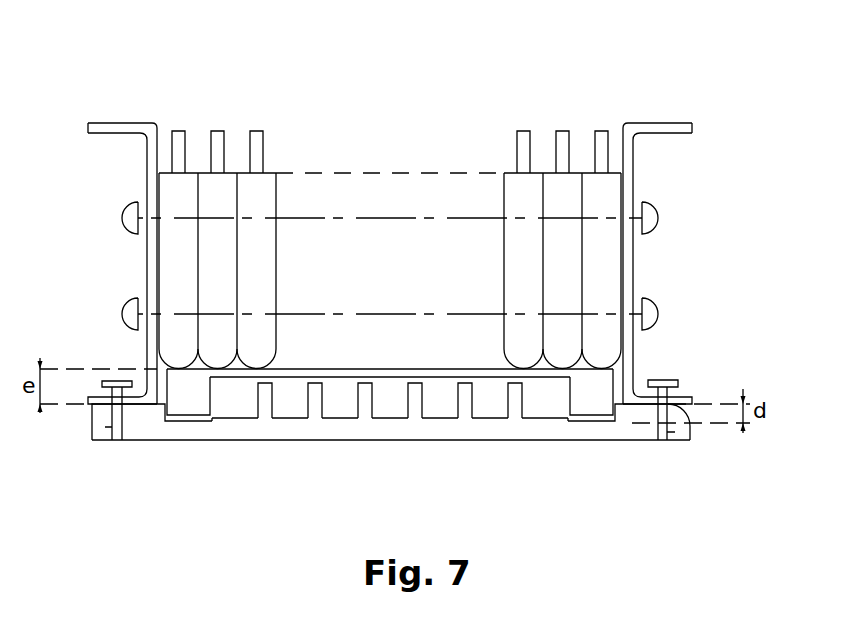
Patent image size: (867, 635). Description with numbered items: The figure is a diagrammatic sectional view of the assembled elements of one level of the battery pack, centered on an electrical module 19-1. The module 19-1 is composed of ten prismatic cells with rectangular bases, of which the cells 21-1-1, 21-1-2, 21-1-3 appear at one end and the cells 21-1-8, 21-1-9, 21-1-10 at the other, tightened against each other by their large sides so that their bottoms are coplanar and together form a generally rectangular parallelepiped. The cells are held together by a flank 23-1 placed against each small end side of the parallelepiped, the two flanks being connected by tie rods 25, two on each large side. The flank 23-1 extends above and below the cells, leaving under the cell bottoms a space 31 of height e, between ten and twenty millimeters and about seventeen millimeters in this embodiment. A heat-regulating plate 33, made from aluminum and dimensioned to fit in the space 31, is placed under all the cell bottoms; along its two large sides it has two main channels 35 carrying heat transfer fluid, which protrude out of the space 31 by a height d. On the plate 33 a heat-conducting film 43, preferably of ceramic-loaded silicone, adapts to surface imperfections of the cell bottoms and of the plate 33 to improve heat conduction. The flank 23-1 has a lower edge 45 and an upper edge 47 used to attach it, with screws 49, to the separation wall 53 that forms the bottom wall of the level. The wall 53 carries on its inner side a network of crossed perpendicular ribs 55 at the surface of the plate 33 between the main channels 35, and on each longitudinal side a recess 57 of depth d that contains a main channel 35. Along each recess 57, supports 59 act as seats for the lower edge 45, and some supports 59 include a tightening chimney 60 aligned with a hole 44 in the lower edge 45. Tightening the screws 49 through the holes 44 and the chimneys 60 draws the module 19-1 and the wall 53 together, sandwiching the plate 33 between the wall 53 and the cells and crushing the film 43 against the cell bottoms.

The electrical module 19-1 is at (243, 72).
The prismatic cell 21-1-1 is at (183, 187).
The prismatic cell 21-1-2 is at (218, 186).
The prismatic cell 21-1-3 is at (272, 192).
The prismatic cell 21-1-8 is at (512, 188).
The prismatic cell 21-1-9 is at (553, 185).
The prismatic cell 21-1-10 is at (592, 185).
The flank 23-1 is at (155, 186).
The tie rod 25 is at (344, 313).
The upper edge 47 is at (120, 134).
The screw 49 is at (117, 381).
The lower edge 45 is at (138, 393).
The hole 44 is at (98, 403).
The tightening chimney 60 is at (105, 427).
The support 59 is at (146, 414).
The main channel 35 is at (186, 403).
The recess 57 is at (203, 418).
The rib 55 is at (265, 407).
The space 31 is at (297, 403).
The separation wall 53 is at (345, 425).
The heat-regulating plate 33 is at (447, 372).
The heat-conducting film 43 is at (442, 363).